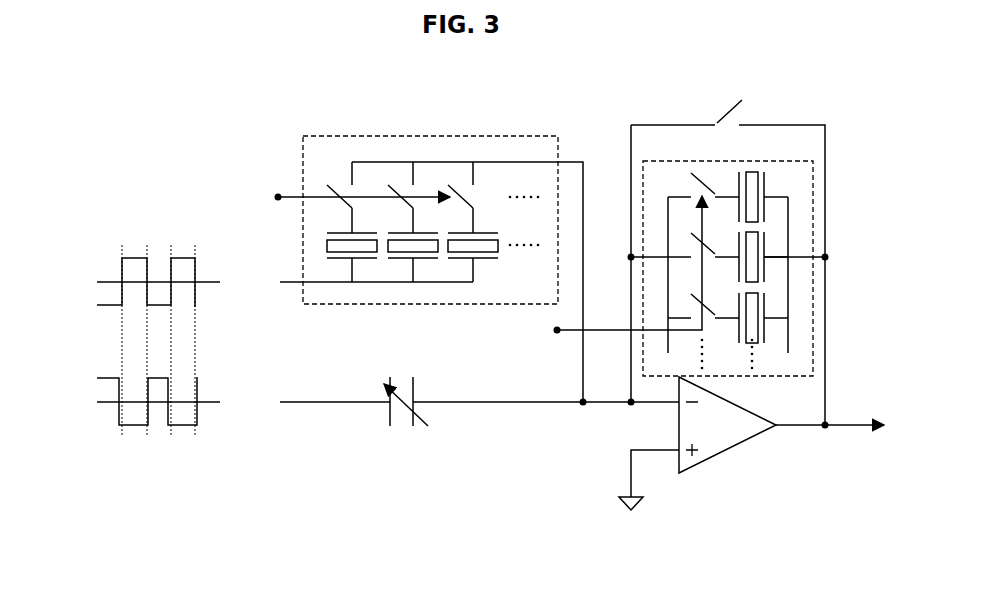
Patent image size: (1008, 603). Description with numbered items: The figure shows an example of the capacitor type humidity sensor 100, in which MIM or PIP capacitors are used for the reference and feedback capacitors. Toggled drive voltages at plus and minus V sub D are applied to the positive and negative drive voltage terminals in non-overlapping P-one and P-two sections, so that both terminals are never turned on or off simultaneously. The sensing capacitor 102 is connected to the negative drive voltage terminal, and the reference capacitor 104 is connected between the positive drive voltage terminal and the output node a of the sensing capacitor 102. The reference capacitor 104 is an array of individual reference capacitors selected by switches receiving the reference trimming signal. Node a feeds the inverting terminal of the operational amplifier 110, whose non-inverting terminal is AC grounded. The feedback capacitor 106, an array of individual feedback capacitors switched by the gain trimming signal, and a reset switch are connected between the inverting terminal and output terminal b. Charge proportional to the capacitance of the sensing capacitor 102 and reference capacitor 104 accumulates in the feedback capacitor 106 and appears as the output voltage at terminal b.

The capacitor type humidity sensor 100 is at (253, 93).
The sensing capacitor 102 is at (402, 413).
The reference capacitor 104 is at (430, 220).
The feedback capacitor 106 is at (728, 258).
The operational amplifier 110 is at (725, 450).